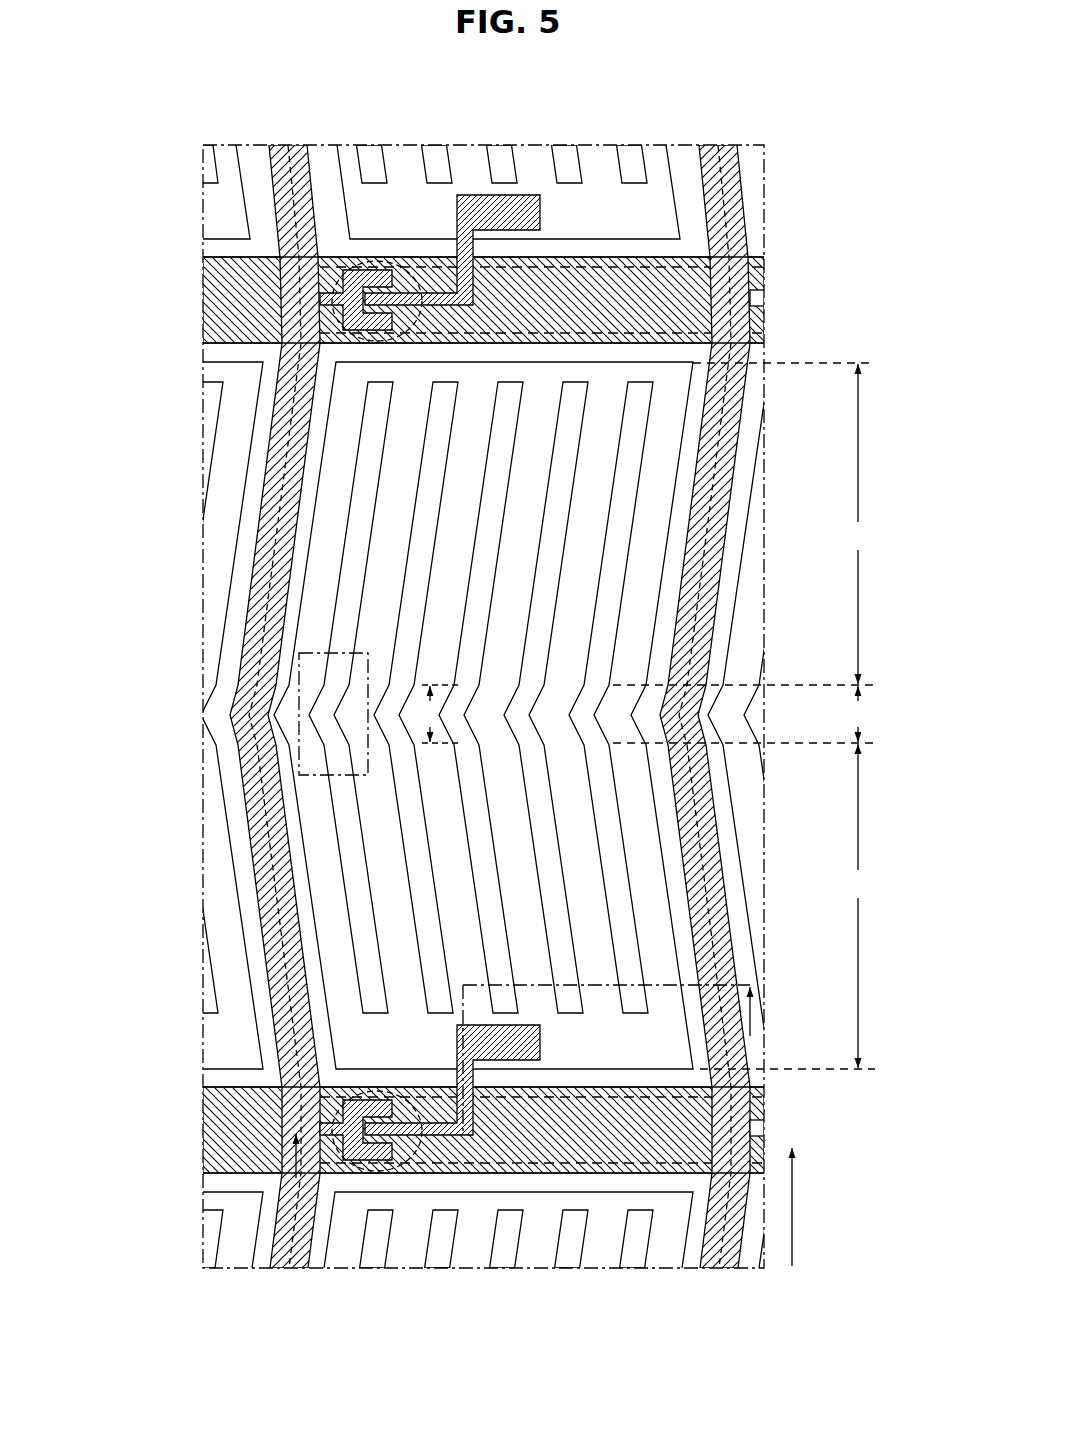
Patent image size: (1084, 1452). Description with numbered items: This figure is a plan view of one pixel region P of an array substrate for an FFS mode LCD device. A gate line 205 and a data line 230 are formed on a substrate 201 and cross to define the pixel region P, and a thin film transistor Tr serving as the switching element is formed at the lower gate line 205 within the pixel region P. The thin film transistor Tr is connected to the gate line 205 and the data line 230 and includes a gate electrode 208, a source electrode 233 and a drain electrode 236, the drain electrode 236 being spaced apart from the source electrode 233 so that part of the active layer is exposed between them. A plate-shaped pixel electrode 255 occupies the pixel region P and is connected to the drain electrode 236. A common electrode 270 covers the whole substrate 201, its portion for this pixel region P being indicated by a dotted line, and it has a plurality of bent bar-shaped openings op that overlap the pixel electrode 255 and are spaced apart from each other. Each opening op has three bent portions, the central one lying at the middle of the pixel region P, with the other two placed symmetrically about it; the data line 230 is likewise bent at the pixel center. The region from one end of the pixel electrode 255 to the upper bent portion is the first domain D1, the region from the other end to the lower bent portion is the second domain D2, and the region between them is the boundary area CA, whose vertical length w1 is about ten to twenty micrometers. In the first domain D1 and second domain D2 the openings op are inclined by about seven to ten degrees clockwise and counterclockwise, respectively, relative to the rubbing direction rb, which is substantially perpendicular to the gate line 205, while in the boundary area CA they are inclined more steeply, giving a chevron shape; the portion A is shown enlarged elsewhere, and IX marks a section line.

The substrate 201 is at (721, 127).
The gate line 205 is at (525, 1155).
The gate electrode 208 is at (366, 1117).
The data line 230 is at (252, 550).
The source electrode 233 is at (372, 1150).
The drain electrode 236 is at (425, 1140).
The pixel electrode 255 is at (315, 499).
The common electrode 270 is at (583, 262).
The pixel region P is at (590, 572).
The opening op is at (362, 497).
The A portion A is at (297, 688).
The thin film transistor Tr is at (430, 1132).
The distance between second and third bent portions w1 is at (438, 714).
The first domain D1 is at (744, 524).
The second domain D2 is at (787, 906).
The boundary area CA is at (744, 714).
The section line IX is at (524, 1096).
The rubbing direction rb is at (806, 1207).